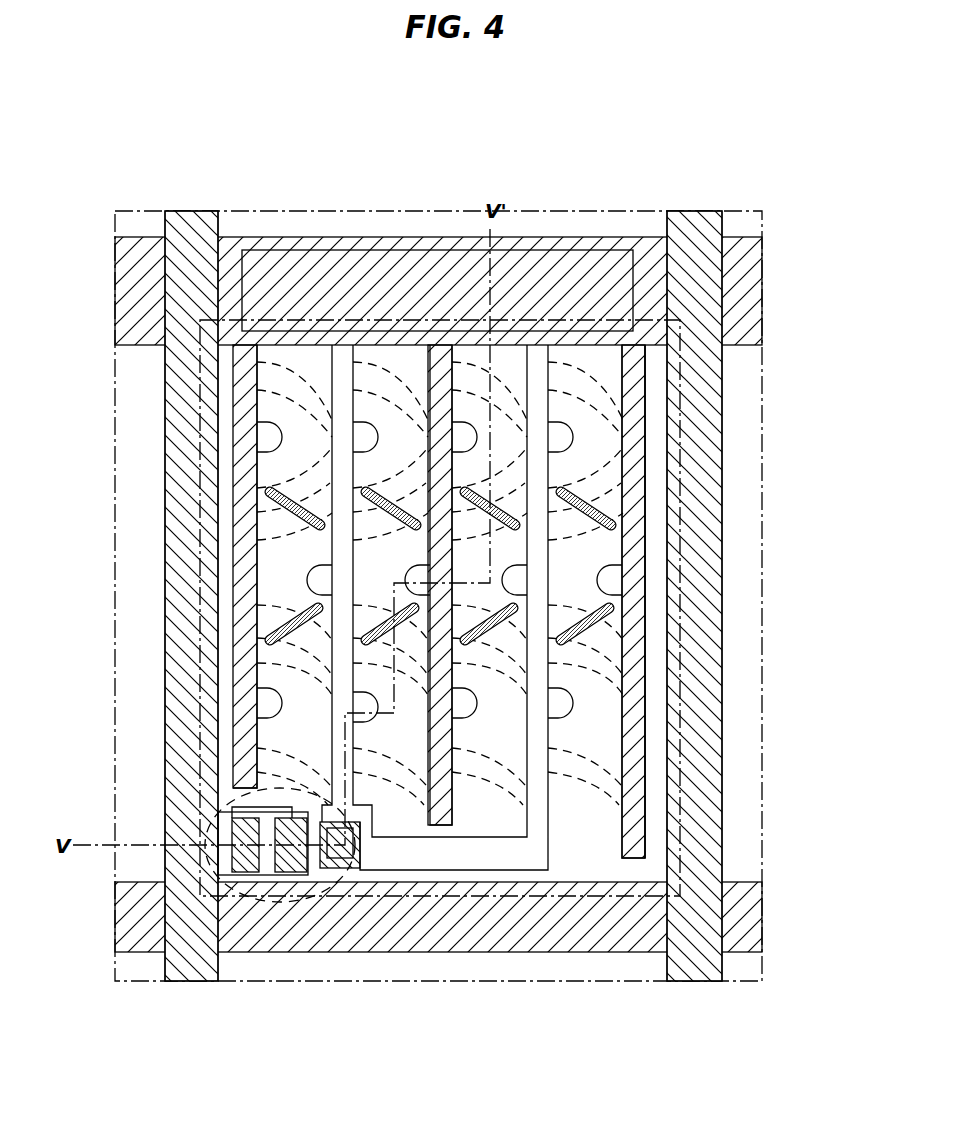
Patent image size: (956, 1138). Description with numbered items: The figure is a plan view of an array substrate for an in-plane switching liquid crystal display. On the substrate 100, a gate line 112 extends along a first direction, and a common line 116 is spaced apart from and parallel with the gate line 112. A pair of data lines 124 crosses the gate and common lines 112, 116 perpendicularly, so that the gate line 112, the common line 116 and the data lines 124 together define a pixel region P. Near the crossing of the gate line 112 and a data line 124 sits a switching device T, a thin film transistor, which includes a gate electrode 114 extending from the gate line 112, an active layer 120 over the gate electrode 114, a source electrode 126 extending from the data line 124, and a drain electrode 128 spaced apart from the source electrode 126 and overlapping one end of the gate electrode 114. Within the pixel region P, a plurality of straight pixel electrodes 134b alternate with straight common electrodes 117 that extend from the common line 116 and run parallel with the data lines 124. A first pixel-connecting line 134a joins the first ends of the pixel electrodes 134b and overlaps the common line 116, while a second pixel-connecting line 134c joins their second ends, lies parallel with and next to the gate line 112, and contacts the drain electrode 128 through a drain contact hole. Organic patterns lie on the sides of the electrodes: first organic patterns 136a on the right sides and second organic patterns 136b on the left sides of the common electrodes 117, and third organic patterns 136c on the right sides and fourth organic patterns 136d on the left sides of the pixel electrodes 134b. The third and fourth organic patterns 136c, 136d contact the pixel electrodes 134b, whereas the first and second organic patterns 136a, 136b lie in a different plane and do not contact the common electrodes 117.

The substrate 100 is at (762, 800).
The gate line 112 is at (625, 953).
The gate electrode 114 is at (217, 787).
The common line 116 is at (553, 237).
The common electrode 117 is at (647, 627).
The active layer 120 is at (252, 862).
The data line 124 is at (165, 650).
The source electrode 126 is at (241, 862).
The drain electrode 128 is at (290, 865).
The first pixel-connecting line 134a is at (620, 301).
The pixel electrode 134b is at (530, 401).
The second pixel-connecting line 134c is at (481, 872).
The first organic pattern 136a is at (286, 443).
The second organic pattern 136b is at (403, 586).
The third organic pattern 136c is at (383, 448).
The fourth organic pattern 136d is at (306, 588).
The pixel region P is at (680, 521).
The switching device T is at (345, 869).